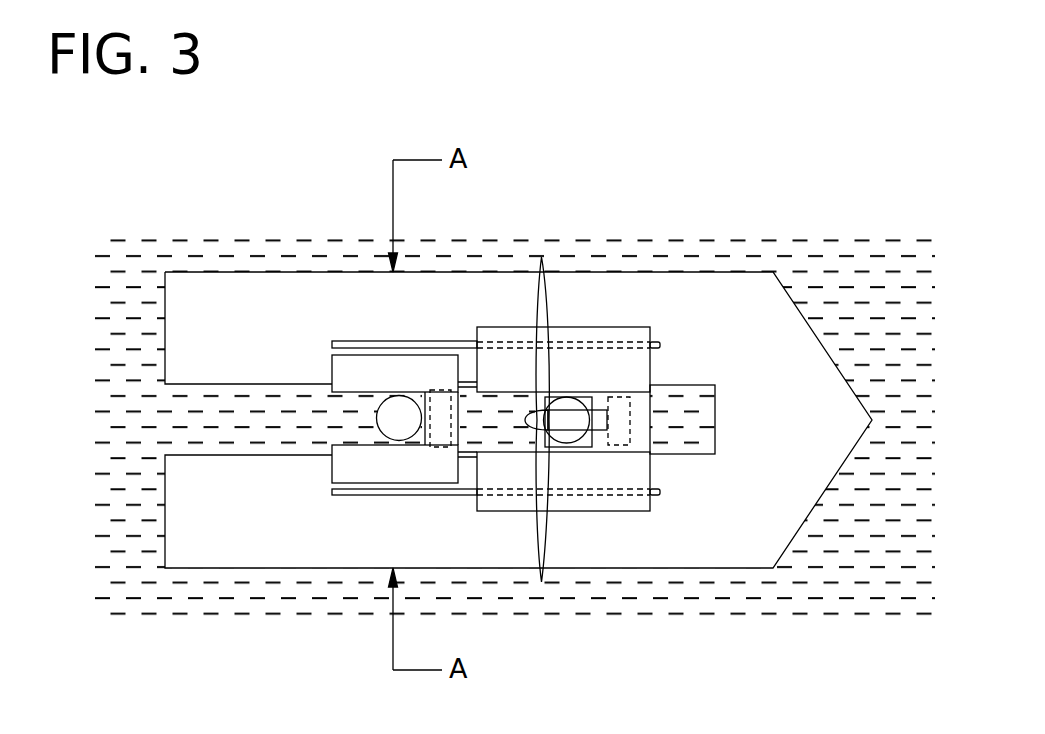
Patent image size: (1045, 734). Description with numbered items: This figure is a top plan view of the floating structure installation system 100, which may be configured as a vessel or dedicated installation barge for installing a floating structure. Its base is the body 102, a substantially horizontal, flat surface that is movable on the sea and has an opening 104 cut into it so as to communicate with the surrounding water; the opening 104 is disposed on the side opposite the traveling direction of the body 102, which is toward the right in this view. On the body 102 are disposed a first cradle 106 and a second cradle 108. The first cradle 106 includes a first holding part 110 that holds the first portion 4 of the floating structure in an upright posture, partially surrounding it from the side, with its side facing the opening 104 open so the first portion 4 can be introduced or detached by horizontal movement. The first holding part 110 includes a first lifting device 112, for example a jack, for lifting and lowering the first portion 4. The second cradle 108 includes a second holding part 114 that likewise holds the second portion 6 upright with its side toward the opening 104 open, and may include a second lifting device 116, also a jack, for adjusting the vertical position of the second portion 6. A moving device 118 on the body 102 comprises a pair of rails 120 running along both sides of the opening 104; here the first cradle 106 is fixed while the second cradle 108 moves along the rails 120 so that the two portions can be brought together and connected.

The floating structure installation system 100 is at (795, 190).
The body 102 is at (307, 569).
The opening 104 is at (172, 424).
The first cradle 106 is at (332, 373).
The second cradle 108 is at (652, 365).
The first holding part 110 is at (424, 424).
The first lifting device 112 is at (434, 448).
The second holding part 114 is at (585, 397).
The second lifting device 116 is at (630, 445).
The moving device 118 is at (550, 420).
The pair of rails 120 is at (657, 345).
The first portion 4 is at (392, 442).
The second portion 6 is at (572, 443).